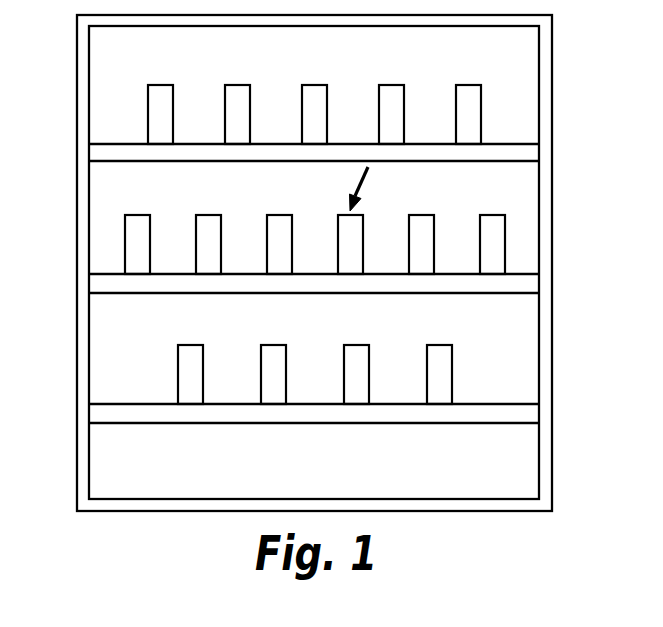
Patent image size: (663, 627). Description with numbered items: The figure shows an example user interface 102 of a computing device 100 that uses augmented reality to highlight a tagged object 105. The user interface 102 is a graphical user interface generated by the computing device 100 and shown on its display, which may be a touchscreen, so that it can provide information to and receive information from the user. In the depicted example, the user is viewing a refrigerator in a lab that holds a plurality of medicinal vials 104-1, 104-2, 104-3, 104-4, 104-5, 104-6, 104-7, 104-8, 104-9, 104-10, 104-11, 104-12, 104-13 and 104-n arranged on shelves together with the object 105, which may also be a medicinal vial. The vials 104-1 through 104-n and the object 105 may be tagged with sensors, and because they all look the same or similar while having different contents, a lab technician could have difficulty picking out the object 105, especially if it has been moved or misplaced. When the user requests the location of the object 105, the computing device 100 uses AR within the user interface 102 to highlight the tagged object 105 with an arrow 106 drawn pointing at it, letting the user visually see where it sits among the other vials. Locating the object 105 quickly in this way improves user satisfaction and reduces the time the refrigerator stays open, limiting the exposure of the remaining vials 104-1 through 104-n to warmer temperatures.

The computing device 100 is at (83, 50).
The user interface 102 is at (520, 205).
The medicinal vial 104-1 is at (162, 92).
The medicinal vial 104-2 is at (239, 92).
The medicinal vial 104-3 is at (316, 92).
The medicinal vial 104-4 is at (393, 92).
The medicinal vial 104-5 is at (470, 92).
The medicinal vial 104-6 is at (139, 222).
The medicinal vial 104-7 is at (210, 222).
The medicinal vial 104-8 is at (281, 222).
The medicinal vial 104-9 is at (423, 222).
The medicinal vial 104-10 is at (494, 222).
The medicinal vial 104-11 is at (192, 352).
The medicinal vial 104-12 is at (275, 352).
The medicinal vial 104-13 is at (358, 352).
The medicinal vial 104-n is at (441, 352).
The tagged object 105 is at (343, 247).
The arrow 106 is at (367, 182).